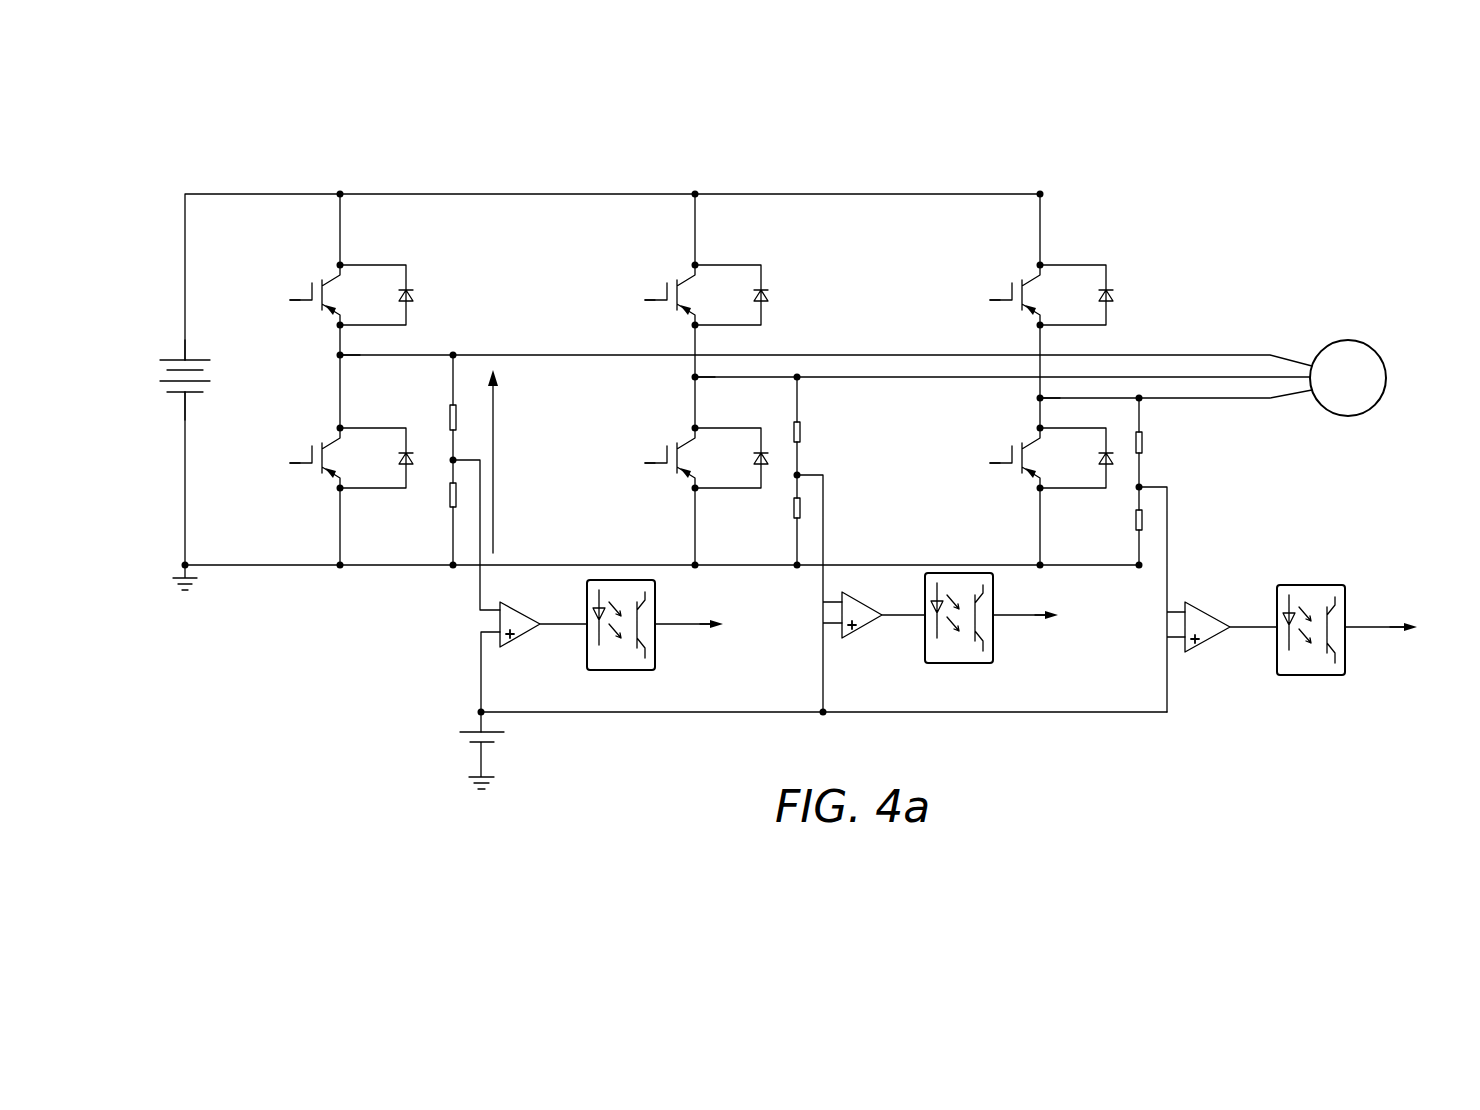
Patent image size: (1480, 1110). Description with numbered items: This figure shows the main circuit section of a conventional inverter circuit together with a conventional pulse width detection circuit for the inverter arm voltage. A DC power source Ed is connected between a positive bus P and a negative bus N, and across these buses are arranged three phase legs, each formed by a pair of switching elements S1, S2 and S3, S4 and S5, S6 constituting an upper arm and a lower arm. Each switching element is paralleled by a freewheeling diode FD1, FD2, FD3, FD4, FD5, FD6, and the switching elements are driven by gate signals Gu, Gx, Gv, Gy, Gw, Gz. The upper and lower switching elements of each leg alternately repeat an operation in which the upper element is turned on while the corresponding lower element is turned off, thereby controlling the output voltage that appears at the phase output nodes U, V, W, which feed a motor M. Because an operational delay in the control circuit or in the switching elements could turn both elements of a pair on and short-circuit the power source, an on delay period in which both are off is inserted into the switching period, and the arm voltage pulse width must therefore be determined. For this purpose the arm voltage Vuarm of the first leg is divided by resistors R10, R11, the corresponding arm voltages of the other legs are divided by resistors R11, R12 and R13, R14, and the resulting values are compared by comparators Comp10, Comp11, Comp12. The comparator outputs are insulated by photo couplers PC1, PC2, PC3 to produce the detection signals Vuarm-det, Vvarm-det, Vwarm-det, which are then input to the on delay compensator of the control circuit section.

The DC power source Ed is at (178, 394).
The positive DC bus P is at (197, 346).
The negative DC bus N is at (197, 411).
The switching element S1 is at (315, 304).
The switching element S2 is at (315, 466).
The switching element S3 is at (670, 304).
The switching element S4 is at (670, 466).
The switching element S5 is at (1015, 304).
The switching element S6 is at (1015, 466).
The freewheeling diode FD1 is at (376, 295).
The freewheeling diode FD2 is at (376, 458).
The freewheeling diode FD3 is at (731, 295).
The freewheeling diode FD4 is at (731, 458).
The freewheeling diode FD5 is at (1076, 295).
The freewheeling diode FD6 is at (1076, 458).
The gate signal Gu is at (277, 303).
The gate signal Gv is at (630, 303).
The gate signal Gw is at (973, 303).
The gate signal Gx is at (281, 463).
The gate signal Gy is at (626, 463).
The gate signal Gz is at (973, 463).
The U-phase output node U is at (340, 356).
The V-phase output node V is at (693, 378).
The W-phase output node W is at (1035, 400).
The resistor R10 is at (429, 417).
The resistor R11 is at (625, 471).
The voltage dividing resistor R12 is at (774, 513).
The voltage dividing resistor R13 is at (1162, 446).
The voltage dividing resistor R14 is at (1116, 520).
The arm voltage Vuarm is at (530, 461).
The comparator Comp 10 Comp10 is at (538, 610).
The comparator Comp 11 Comp11 is at (877, 601).
The comparator Comp12 is at (1224, 612).
The photo coupler PC1 is at (655, 637).
The photocoupler PC2 is at (991, 630).
The photocoupler PC3 is at (1347, 645).
The U-phase arm voltage detection signal Vuarm-det is at (733, 640).
The V-phase arm voltage detection signal Vvarm-det is at (1078, 635).
The W-phase arm voltage detection signal Vwarm-det is at (1413, 648).
The motor M is at (1348, 378).